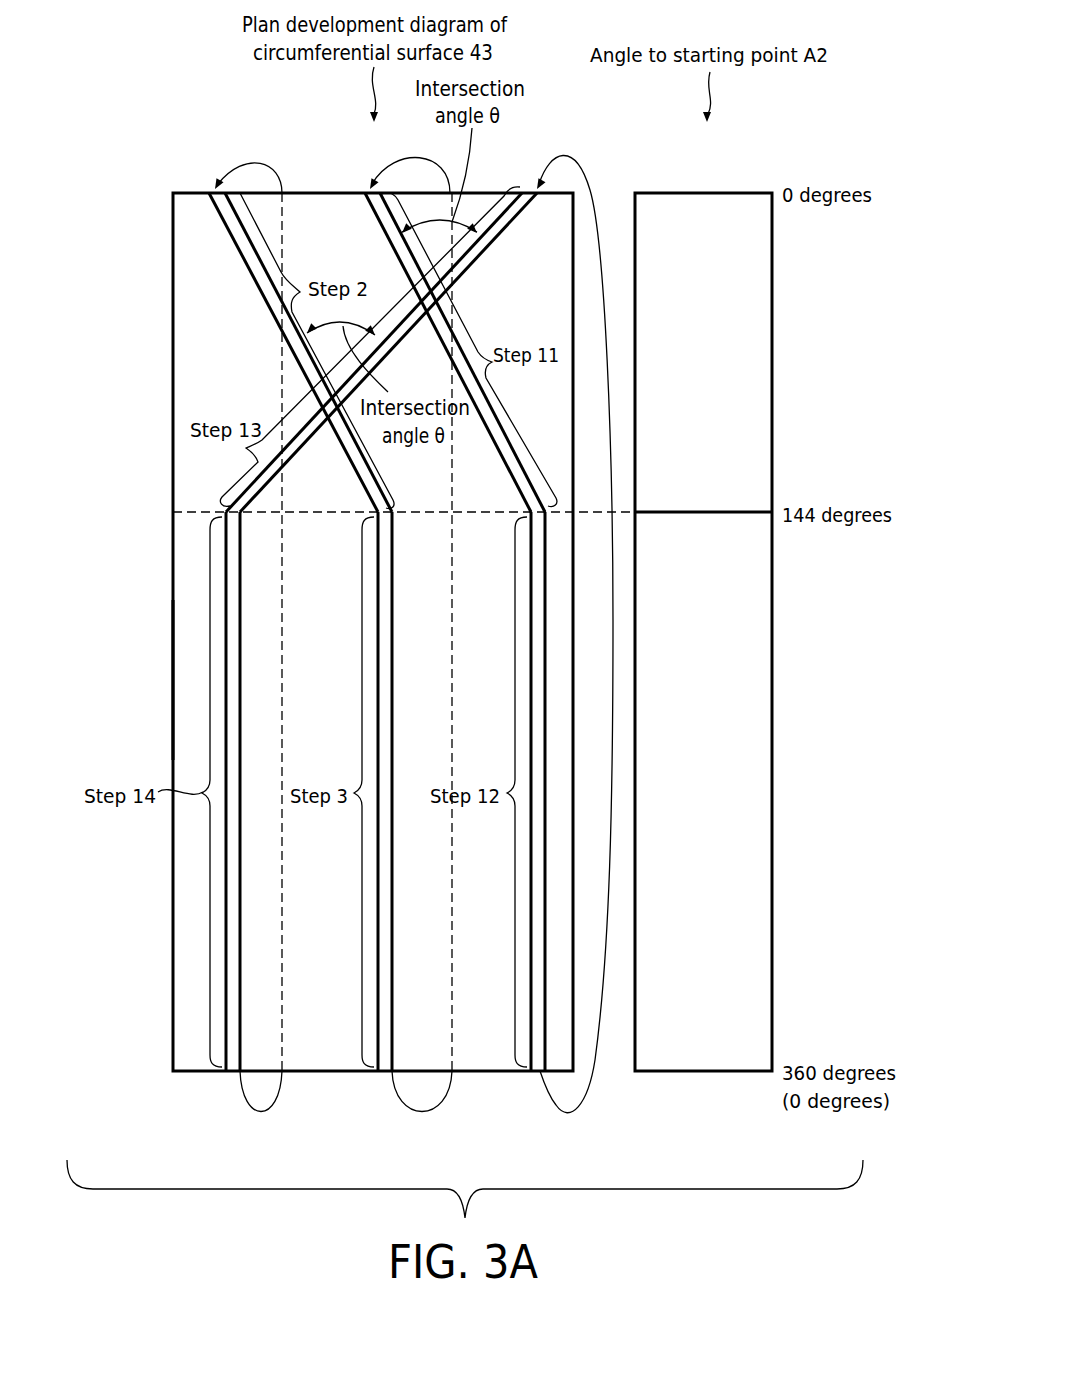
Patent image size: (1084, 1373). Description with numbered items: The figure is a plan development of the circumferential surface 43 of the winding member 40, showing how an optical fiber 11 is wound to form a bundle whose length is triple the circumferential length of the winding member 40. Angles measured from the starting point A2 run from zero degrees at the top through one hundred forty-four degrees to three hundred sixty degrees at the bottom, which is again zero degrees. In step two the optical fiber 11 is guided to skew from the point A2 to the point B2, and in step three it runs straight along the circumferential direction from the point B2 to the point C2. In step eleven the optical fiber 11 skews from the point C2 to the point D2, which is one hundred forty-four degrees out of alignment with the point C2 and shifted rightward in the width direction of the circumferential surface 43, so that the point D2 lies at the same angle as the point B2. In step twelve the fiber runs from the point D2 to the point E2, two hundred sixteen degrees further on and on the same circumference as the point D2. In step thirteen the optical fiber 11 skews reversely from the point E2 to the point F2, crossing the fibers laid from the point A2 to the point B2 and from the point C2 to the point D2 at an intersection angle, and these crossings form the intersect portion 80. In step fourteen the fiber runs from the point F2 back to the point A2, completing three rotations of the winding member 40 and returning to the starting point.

The optical fiber 11 is at (236, 247).
The winding member 40 is at (145, 622).
The circumferential surface 43 is at (187, 678).
The intersect portion 80 is at (424, 305).
The point A2 is at (214, 188).
The point B2 is at (393, 517).
The point C2 is at (367, 188).
The point D2 is at (535, 514).
The point E2 is at (536, 188).
The point F2 is at (228, 508).